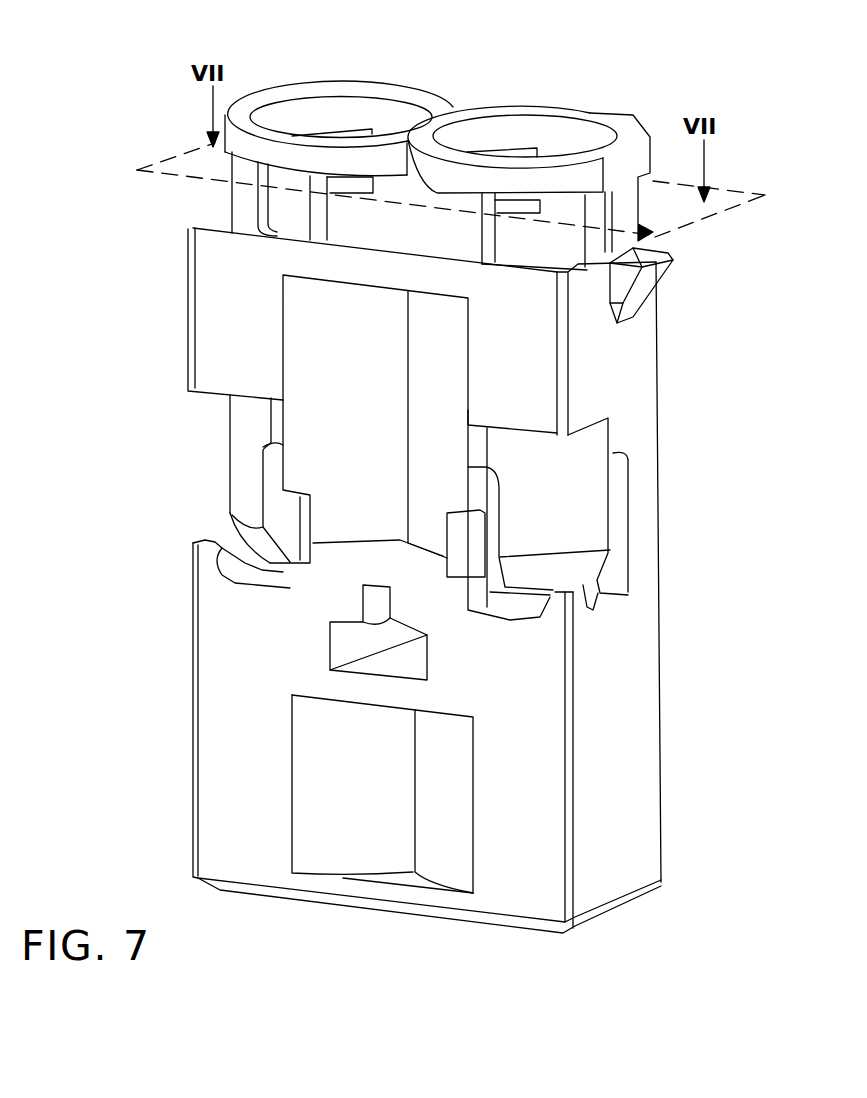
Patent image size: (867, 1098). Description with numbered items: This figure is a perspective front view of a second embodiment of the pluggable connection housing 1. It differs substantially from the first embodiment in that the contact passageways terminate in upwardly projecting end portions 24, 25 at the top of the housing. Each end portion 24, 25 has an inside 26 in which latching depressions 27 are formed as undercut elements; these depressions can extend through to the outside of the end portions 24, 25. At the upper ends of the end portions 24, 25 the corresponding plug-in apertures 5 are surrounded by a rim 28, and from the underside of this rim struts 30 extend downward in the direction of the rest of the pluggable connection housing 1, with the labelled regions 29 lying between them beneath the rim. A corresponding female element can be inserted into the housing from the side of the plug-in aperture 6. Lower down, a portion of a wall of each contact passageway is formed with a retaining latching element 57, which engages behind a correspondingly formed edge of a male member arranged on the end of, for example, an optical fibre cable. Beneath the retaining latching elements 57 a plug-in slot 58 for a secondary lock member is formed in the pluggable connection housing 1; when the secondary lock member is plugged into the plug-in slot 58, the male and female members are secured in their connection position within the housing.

The pluggable connection housing 1 is at (714, 567).
The plug-in aperture 5 is at (597, 132).
The plug-in aperture 6 is at (370, 100).
The end portion 24 is at (648, 202).
The end portion 25 is at (227, 197).
The inside 26 is at (485, 130).
The latching depression 27 is at (340, 134).
The rim 28 is at (638, 120).
The slot 29 is at (356, 231).
The strut 30 is at (302, 222).
The retaining latching element 57 is at (243, 459).
The plug-in slot 58 is at (413, 662).